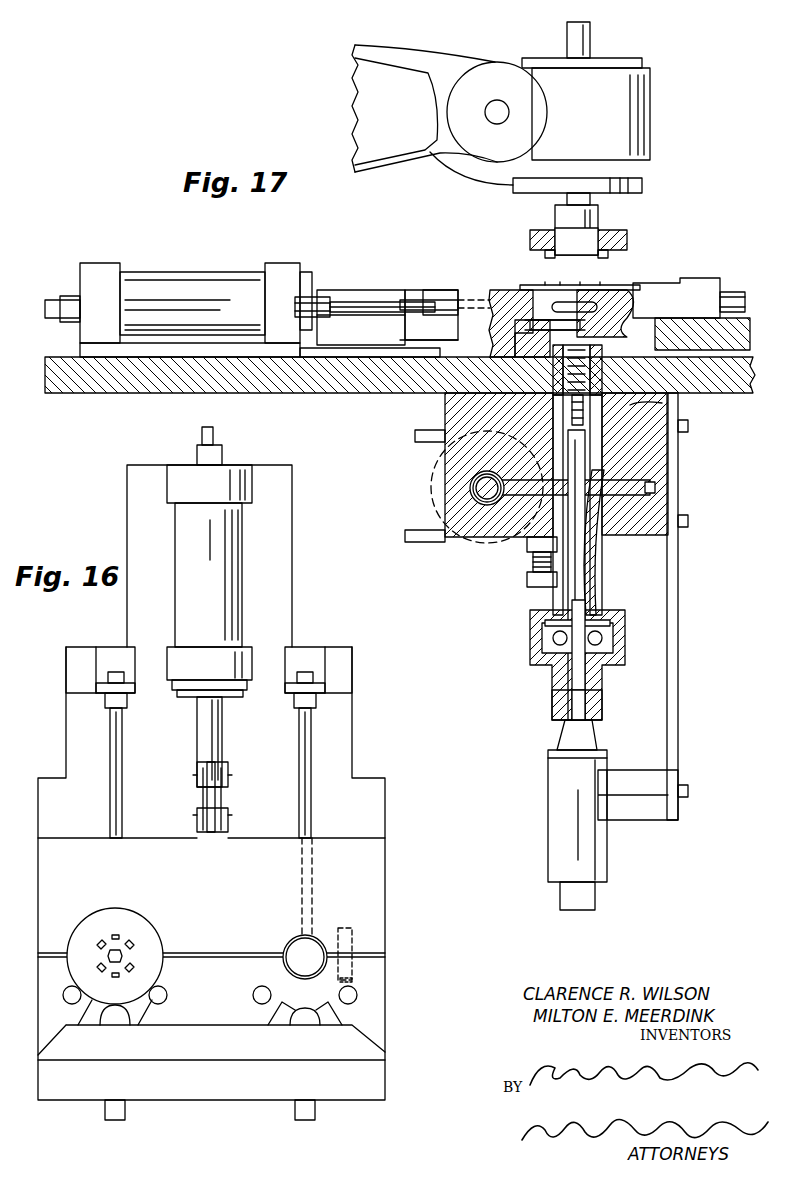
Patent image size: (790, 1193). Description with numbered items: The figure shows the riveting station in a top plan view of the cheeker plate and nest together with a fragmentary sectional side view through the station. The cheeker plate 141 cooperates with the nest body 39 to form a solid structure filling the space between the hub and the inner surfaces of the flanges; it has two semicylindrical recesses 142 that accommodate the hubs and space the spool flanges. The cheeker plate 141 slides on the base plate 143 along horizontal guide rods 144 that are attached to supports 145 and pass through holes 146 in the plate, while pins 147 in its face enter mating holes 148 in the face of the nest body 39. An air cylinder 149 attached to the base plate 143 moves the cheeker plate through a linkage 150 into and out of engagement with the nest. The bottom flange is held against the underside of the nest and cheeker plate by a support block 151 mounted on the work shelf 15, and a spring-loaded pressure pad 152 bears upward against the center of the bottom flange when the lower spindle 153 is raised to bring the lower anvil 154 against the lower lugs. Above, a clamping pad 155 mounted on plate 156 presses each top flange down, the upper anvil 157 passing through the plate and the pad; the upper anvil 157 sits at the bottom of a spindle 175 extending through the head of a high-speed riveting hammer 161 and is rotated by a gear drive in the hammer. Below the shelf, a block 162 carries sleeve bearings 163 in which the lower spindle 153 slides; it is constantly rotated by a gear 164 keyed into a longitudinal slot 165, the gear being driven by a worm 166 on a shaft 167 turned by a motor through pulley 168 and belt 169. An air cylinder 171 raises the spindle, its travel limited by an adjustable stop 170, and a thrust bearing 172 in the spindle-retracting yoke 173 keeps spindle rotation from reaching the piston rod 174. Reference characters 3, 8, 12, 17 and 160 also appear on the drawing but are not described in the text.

In FIG. 17, the guide plate 3 is at (536, 295).
In FIG. 16, the guide plate 3 is at (152, 936).
In FIG. 17, the spindle 8 is at (515, 360).
In FIG. 17, the shaft 12 is at (748, 336).
In FIG. 17, the work shelf 15 is at (325, 385).
In FIG. 17, the arm 17 is at (429, 316).
In FIG. 17, the nest body 39 is at (692, 295).
In FIG. 16, the nest body 39 is at (378, 1029).
In FIG. 17, the cheeker plate 141 is at (500, 298).
In FIG. 16, the cheeker plate 141 is at (378, 873).
In FIG. 16, the semicylindrical recesses 142 is at (290, 943).
In FIG. 17, the base plate 143 is at (330, 348).
In FIG. 16, the base plate 143 is at (274, 737).
In FIG. 17, the horizontal guide rods 144 is at (380, 300).
In FIG. 16, the horizontal guide rods 144 is at (110, 743).
In FIG. 17, the supports 145 is at (312, 298).
In FIG. 16, the supports 145 is at (103, 653).
In FIG. 17, the holes 146 is at (468, 298).
In FIG. 16, the holes 146 is at (312, 851).
In FIG. 17, the pins 147 is at (582, 300).
In FIG. 16, the pins 147 is at (352, 929).
In FIG. 17, the mating holes 148 is at (585, 328).
In FIG. 16, the mating holes 148 is at (352, 981).
In FIG. 17, the air cylinder 149 is at (180, 280).
In FIG. 16, the air cylinder 149 is at (183, 541).
In FIG. 17, the linkage 150 is at (418, 296).
In FIG. 16, the linkage 150 is at (215, 796).
In FIG. 17, the support block 151 is at (448, 399).
In FIG. 17, the spring-loaded pressure pad 152 is at (622, 303).
In FIG. 17, the lower spindle 153 is at (568, 606).
In FIG. 17, the lower anvil 154 is at (598, 391).
In FIG. 17, the clamping pad 155 is at (605, 259).
In FIG. 17, the plate 156 is at (627, 241).
In FIG. 17, the upper anvil 157 is at (598, 213).
In FIG. 17, the plate 160 is at (642, 186).
In FIG. 17, the riveting hammer 161 is at (640, 166).
In FIG. 17, the block 162 is at (660, 449).
In FIG. 17, the sleeve bearings 163 is at (662, 403).
In FIG. 17, the gear 164 is at (655, 489).
In FIG. 17, the longitudinal slot 165 is at (598, 577).
In FIG. 17, the worm 166 is at (470, 486).
In FIG. 17, the shaft 167 is at (472, 493).
In FIG. 17, the pulley 168 is at (435, 499).
In FIG. 17, the belt 169 is at (425, 541).
In FIG. 17, the adjustable stop 170 is at (527, 581).
In FIG. 17, the air cylinder 171 is at (600, 858).
In FIG. 17, the thrust bearing 172 is at (548, 646).
In FIG. 17, the spindle-retracting yoke 173 is at (600, 704).
In FIG. 17, the piston rod 174 is at (555, 677).
In FIG. 17, the spindle 175 is at (590, 31).